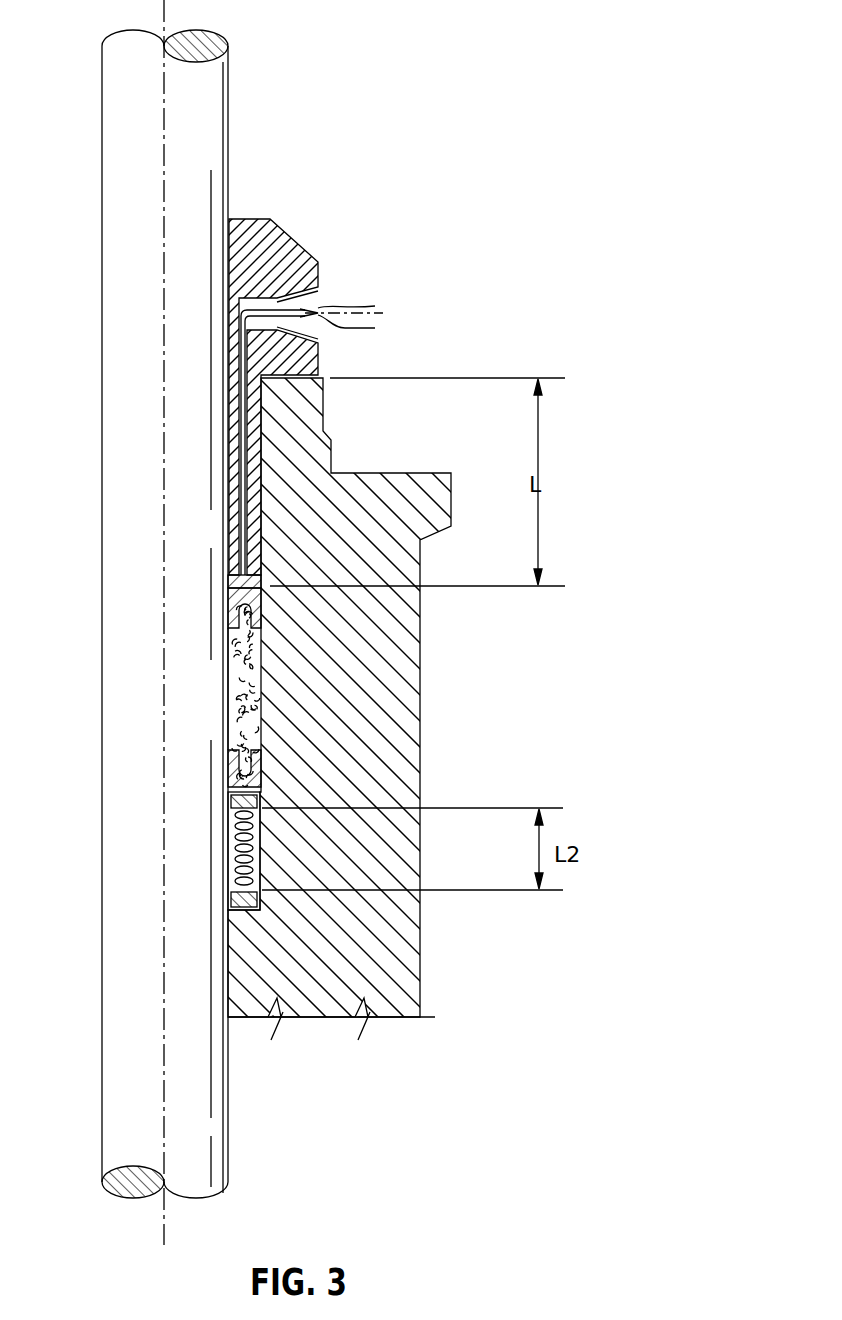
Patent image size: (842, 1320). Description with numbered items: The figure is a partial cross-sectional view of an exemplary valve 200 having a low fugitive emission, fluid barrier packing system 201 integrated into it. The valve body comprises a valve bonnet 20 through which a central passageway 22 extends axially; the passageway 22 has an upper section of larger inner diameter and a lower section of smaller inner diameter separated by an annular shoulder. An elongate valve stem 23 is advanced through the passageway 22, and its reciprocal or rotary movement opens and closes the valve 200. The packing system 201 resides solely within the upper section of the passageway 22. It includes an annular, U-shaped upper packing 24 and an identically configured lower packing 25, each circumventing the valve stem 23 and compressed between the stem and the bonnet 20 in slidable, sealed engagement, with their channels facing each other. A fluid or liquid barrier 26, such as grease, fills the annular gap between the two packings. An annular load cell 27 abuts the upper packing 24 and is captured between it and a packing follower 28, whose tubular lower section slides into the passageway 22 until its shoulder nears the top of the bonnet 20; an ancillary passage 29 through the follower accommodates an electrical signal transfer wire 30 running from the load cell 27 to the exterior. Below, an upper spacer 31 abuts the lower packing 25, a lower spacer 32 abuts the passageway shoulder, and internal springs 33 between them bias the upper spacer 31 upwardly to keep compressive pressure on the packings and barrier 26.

The valve bonnet 20 is at (380, 492).
The central passageway 22 is at (230, 838).
The valve stem 23 is at (230, 72).
The upper packing 24 is at (228, 597).
The lower packing 25 is at (230, 768).
The fluid or liquid barrier 26 is at (230, 683).
The load cell 27 is at (228, 584).
The packing follower 28 is at (283, 255).
The ancillary passage 29 is at (247, 418).
The electrical signal transfer wire 30 is at (298, 314).
The upper spacer 31 is at (230, 800).
The lower spacer 32 is at (230, 898).
The internal springs 33 is at (230, 853).
The valve 200 is at (343, 118).
The packing system 201 is at (216, 714).